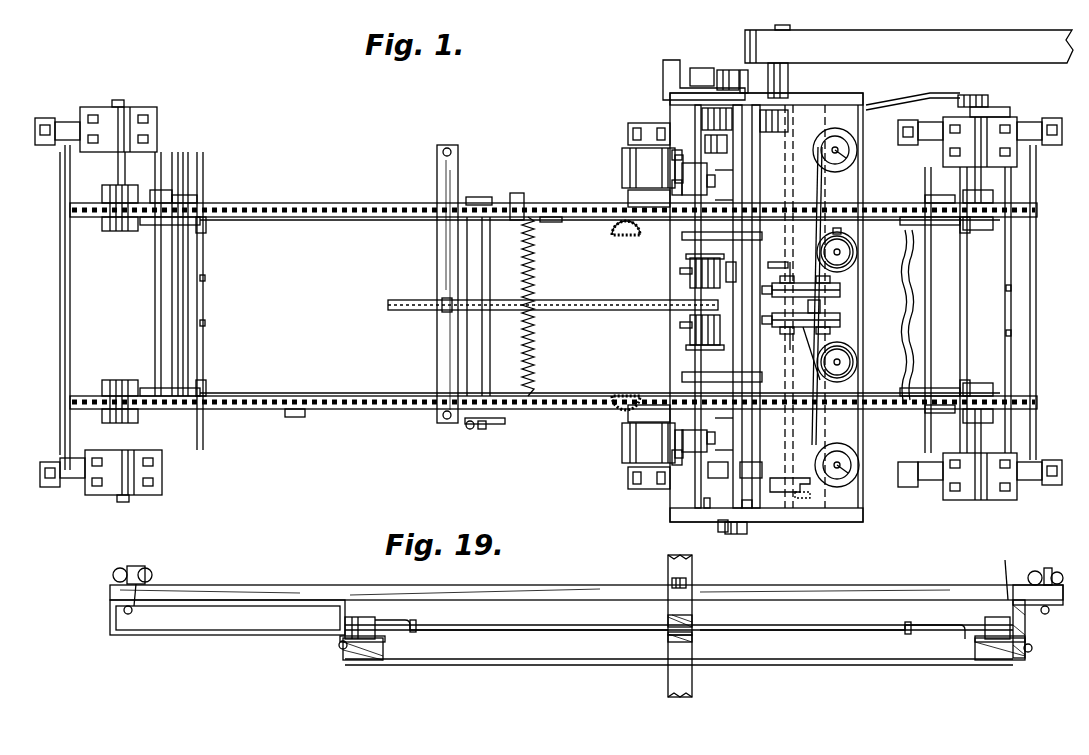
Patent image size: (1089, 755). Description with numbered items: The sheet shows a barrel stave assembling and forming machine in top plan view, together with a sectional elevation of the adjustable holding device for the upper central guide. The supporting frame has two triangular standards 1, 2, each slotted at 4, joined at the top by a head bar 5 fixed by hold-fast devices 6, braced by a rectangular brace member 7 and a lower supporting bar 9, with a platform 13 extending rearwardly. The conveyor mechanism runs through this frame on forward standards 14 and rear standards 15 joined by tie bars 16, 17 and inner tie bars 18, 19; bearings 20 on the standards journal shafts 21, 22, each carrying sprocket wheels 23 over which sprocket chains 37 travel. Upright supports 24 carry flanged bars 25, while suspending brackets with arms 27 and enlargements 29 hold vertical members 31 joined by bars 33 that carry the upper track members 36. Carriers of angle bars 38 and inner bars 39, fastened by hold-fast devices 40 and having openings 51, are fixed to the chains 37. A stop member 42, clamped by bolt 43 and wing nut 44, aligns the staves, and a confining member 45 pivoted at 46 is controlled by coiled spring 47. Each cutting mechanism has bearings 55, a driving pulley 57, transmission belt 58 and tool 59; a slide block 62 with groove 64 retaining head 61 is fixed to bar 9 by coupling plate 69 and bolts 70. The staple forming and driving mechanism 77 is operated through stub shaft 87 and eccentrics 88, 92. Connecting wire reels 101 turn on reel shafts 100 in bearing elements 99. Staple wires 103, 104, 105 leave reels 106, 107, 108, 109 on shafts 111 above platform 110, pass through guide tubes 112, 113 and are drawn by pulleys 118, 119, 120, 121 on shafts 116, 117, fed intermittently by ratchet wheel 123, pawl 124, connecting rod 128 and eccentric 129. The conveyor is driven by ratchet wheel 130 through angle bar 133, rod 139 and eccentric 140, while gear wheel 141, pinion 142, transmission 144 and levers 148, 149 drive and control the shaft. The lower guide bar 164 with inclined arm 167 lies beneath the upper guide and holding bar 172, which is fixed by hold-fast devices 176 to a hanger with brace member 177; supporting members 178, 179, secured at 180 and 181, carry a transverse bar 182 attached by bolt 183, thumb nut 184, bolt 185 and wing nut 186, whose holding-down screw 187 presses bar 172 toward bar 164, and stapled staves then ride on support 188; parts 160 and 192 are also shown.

In FIG. 1, the triangular shaped standard 1 is at (845, 98).
In FIG. 1, the triangular shaped standard 2 is at (775, 522).
In FIG. 1, the vertically disposed slot 4 is at (747, 497).
In FIG. 1, the head bar 5 is at (743, 306).
In FIG. 1, the hold-fast device 6 is at (710, 497).
In FIG. 1, the rectangular brace member 7 is at (763, 306).
In FIG. 1, the rectangular supporting bar 9 is at (695, 130).
In FIG. 1, the platform 13 is at (796, 306).
In FIG. 1, the forward standard 14 is at (60, 122).
In FIG. 1, the rear standard 15 is at (1050, 146).
In FIG. 1, the tie bar 16 is at (178, 170).
In FIG. 1, the tie bar 17 is at (1036, 355).
In FIG. 1, the tie bar 18 is at (45, 303).
In FIG. 1, the tie bar 19 is at (155, 168).
In FIG. 1, the bearing 20 is at (140, 110).
In FIG. 1, the transversely extending shaft 21 is at (118, 278).
In FIG. 1, the transversely extending shaft 22 is at (968, 181).
In FIG. 1, the sprocket wheel 23 is at (88, 220).
In FIG. 1, the upright support 24 is at (480, 197).
In FIG. 1, the flanged bar 25 is at (485, 270).
In FIG. 1, the arm 27 is at (196, 199).
In FIG. 1, the enlargement 29 is at (175, 192).
In FIG. 1, the vertically extending member 31 is at (200, 222).
In FIG. 1, the transversely extending bar 33 is at (190, 310).
In FIG. 1, the upper track member 36 is at (356, 219).
In FIG. 19, the upper track member 36 is at (385, 650).
In FIG. 1, the sprocket chain 37 is at (318, 218).
In FIG. 19, the sprocket chain 37 is at (358, 617).
In FIG. 19, the angle-shaped bar 38 is at (682, 639).
In FIG. 1, the bar 39 is at (205, 255).
In FIG. 19, the bar 39 is at (679, 635).
In FIG. 1, the hold-fast device 40 is at (207, 228).
In FIG. 19, the hold-fast device 40 is at (455, 636).
In FIG. 1, the stop member 42 is at (300, 417).
In FIG. 19, the stop member 42 is at (994, 572).
In FIG. 1, the bolt 43 is at (471, 430).
In FIG. 1, the wing nut 44 is at (487, 428).
In FIG. 1, the confining member 45 is at (524, 203).
In FIG. 1, the pivot 46 is at (555, 223).
In FIG. 1, the coiled spring 47 is at (536, 270).
In FIG. 1, the opening 51 is at (206, 278).
In FIG. 1, the bearing 55 is at (635, 132).
In FIG. 1, the driving pulley 57 is at (622, 165).
In FIG. 1, the transmission belt 58 is at (622, 156).
In FIG. 1, the tool 59 is at (620, 231).
In FIG. 1, the head 61 is at (680, 147).
In FIG. 1, the slide block 62 is at (686, 326).
In FIG. 1, the vertically disposed groove 64 is at (694, 307).
In FIG. 1, the coupling plate 69 is at (714, 309).
In FIG. 1, the bolt 70 is at (733, 304).
In FIG. 1, the combined staple forming and driving mechanism 77 is at (775, 257).
In FIG. 1, the stub shaft 87 is at (728, 70).
In FIG. 1, the eccentric 88 is at (718, 528).
In FIG. 1, the eccentric 92 is at (754, 80).
In FIG. 1, the bearing element 99 is at (741, 266).
In FIG. 1, the reel shaft 100 is at (690, 273).
In FIG. 1, the reel 101 is at (686, 257).
In FIG. 1, the staple wire 103 is at (815, 178).
In FIG. 1, the staple wire 104 is at (854, 352).
In FIG. 1, the staple wire 105 is at (818, 438).
In FIG. 1, the reel 106 is at (852, 253).
In FIG. 1, the reel 107 is at (850, 145).
In FIG. 1, the reel 108 is at (852, 365).
In FIG. 1, the reel 109 is at (855, 478).
In FIG. 1, the platform 110 is at (852, 262).
In FIG. 1, the shaft 111 is at (848, 158).
In FIG. 1, the guide tube 112 is at (774, 280).
In FIG. 1, the guide tube 113 is at (776, 340).
In FIG. 1, the shaft 116 is at (774, 380).
In FIG. 1, the shaft 117 is at (836, 307).
In FIG. 1, the double grooved pulley 118 is at (797, 264).
In FIG. 1, the double grooved pulley 119 is at (806, 353).
In FIG. 1, the double grooved pulley 120 is at (840, 288).
In FIG. 1, the double grooved pulley 121 is at (840, 321).
In FIG. 1, the ratchet wheel 123 is at (800, 500).
In FIG. 1, the spring controlled pawl 124 is at (812, 492).
In FIG. 1, the connecting rod 128 is at (764, 469).
In FIG. 1, the eccentric 129 is at (717, 469).
In FIG. 1, the ratchet wheel 130 is at (1000, 100).
In FIG. 1, the angle-shaped bar 133 is at (930, 93).
In FIG. 1, the rod 139 is at (774, 134).
In FIG. 1, the eccentric 140 is at (716, 144).
In FIG. 1, the gear wheel 141 is at (702, 118).
In FIG. 1, the pinion 142 is at (790, 88).
In FIG. 1, the transmission 144 is at (885, 28).
In FIG. 1, the lever 148 is at (698, 68).
In FIG. 1, the lever 149 is at (663, 66).
In FIG. 1, the arm 160 is at (762, 236).
In FIG. 19, the bar 164 is at (692, 640).
In FIG. 19, the inclined arm 167 is at (692, 688).
In FIG. 1, the combined guide and holding bar 172 is at (398, 300).
In FIG. 19, the combined guide and holding bar 172 is at (692, 618).
In FIG. 1, the hold-fast device 176 is at (618, 318).
In FIG. 1, the brace member 177 is at (680, 325).
In FIG. 19, the brace member 177 is at (692, 566).
In FIG. 19, the supporting member 178 is at (220, 636).
In FIG. 19, the supporting member 179 is at (1028, 630).
In FIG. 19, the securing point 180 is at (338, 647).
In FIG. 19, the securing point 181 is at (1030, 652).
In FIG. 1, the transverse bar 182 is at (440, 252).
In FIG. 19, the transverse bar 182 is at (272, 580).
In FIG. 19, the bolt 183 is at (134, 612).
In FIG. 19, the thumb nut 184 is at (148, 570).
In FIG. 19, the bolt 185 is at (1046, 615).
In FIG. 1, the wing nut 186 is at (452, 153).
In FIG. 19, the wing nut 186 is at (1035, 571).
In FIG. 1, the adjustable holding-down screw 187 is at (442, 310).
In FIG. 19, the adjustable holding-down screw 187 is at (672, 582).
In FIG. 1, the support 188 is at (905, 250).
In FIG. 1, the bracket 192 is at (840, 223).